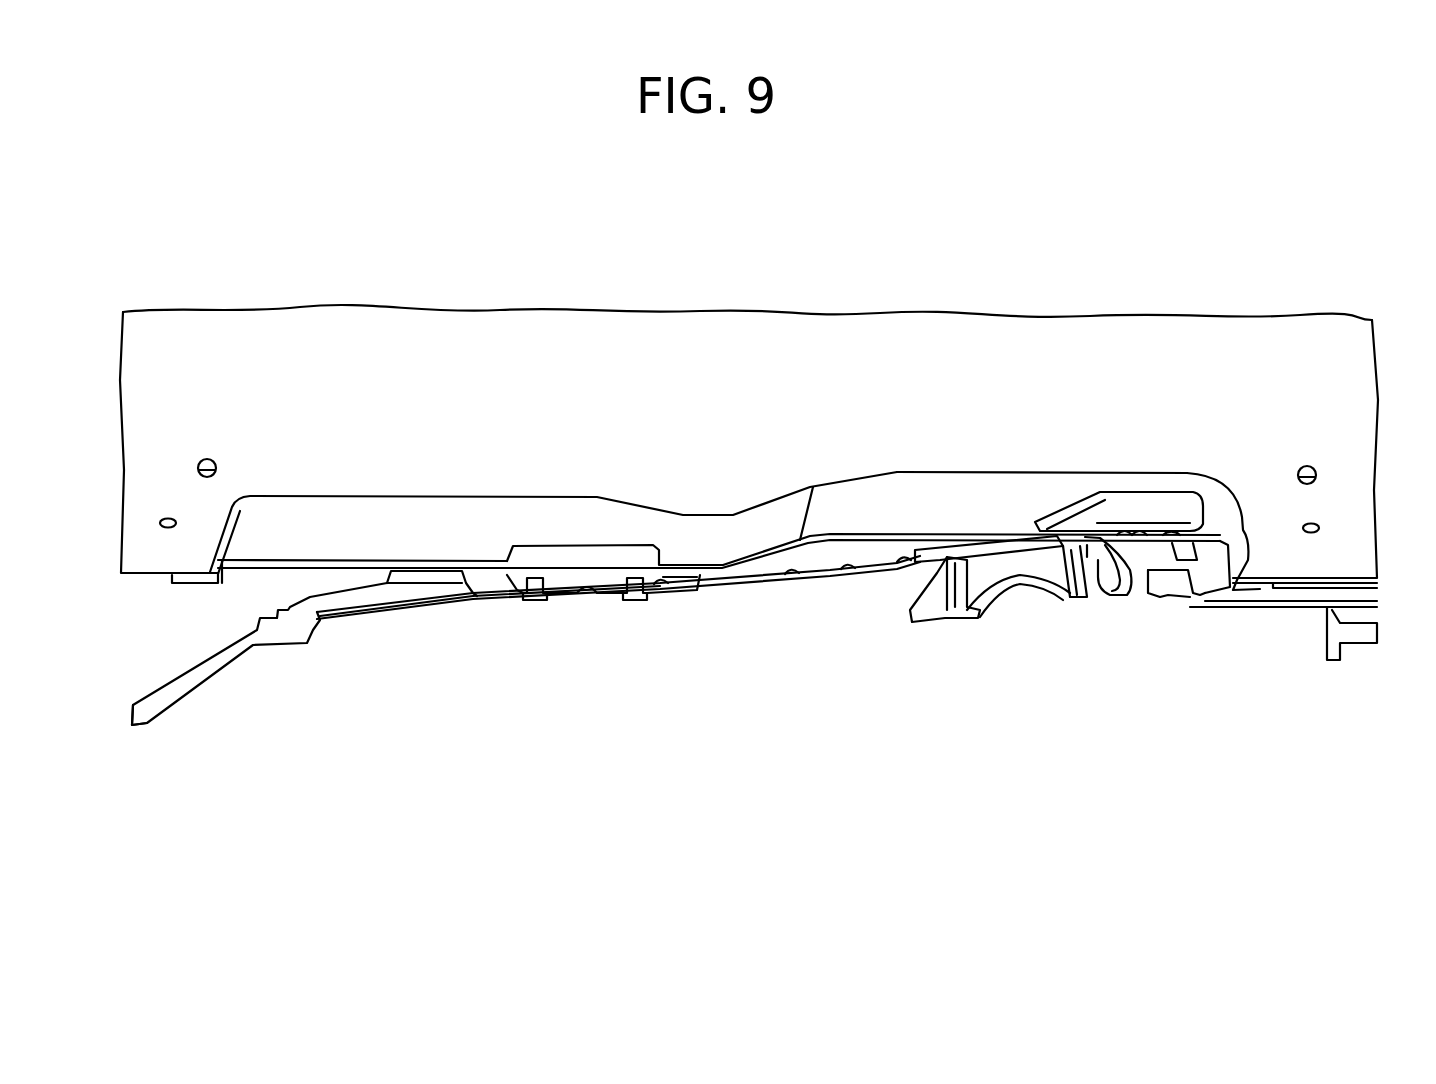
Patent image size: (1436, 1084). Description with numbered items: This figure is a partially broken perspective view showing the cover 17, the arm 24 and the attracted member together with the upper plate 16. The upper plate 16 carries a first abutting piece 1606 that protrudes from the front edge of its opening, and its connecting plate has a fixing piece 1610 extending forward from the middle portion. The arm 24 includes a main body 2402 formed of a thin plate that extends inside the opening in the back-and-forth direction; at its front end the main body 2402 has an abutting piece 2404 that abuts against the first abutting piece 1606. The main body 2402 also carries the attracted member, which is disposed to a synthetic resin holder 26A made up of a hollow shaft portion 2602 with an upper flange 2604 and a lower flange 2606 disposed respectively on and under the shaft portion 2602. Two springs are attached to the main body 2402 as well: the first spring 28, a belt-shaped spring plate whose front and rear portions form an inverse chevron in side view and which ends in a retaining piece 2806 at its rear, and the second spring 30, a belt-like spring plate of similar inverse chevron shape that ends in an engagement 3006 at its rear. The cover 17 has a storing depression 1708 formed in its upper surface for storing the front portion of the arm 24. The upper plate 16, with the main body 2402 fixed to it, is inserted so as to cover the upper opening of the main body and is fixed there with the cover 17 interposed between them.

The cover 17 is at (1213, 333).
The upper plate 16 is at (1290, 620).
The first abutting piece 1606 is at (1172, 588).
The fixing piece 1610 is at (557, 580).
The storing depression 1708 is at (830, 553).
The arm 24 is at (742, 590).
The main body 2402 is at (820, 577).
The abutting piece 2404 is at (1233, 487).
The synthetic resin holder 26A is at (1118, 600).
The shaft portion 2602 is at (1093, 597).
The upper flange 2604 is at (917, 560).
The lower flange 2606 is at (923, 617).
The first spring 28 is at (675, 585).
The retaining piece 2806 is at (462, 578).
The second spring 30 is at (227, 673).
The engagement 3006 is at (138, 733).